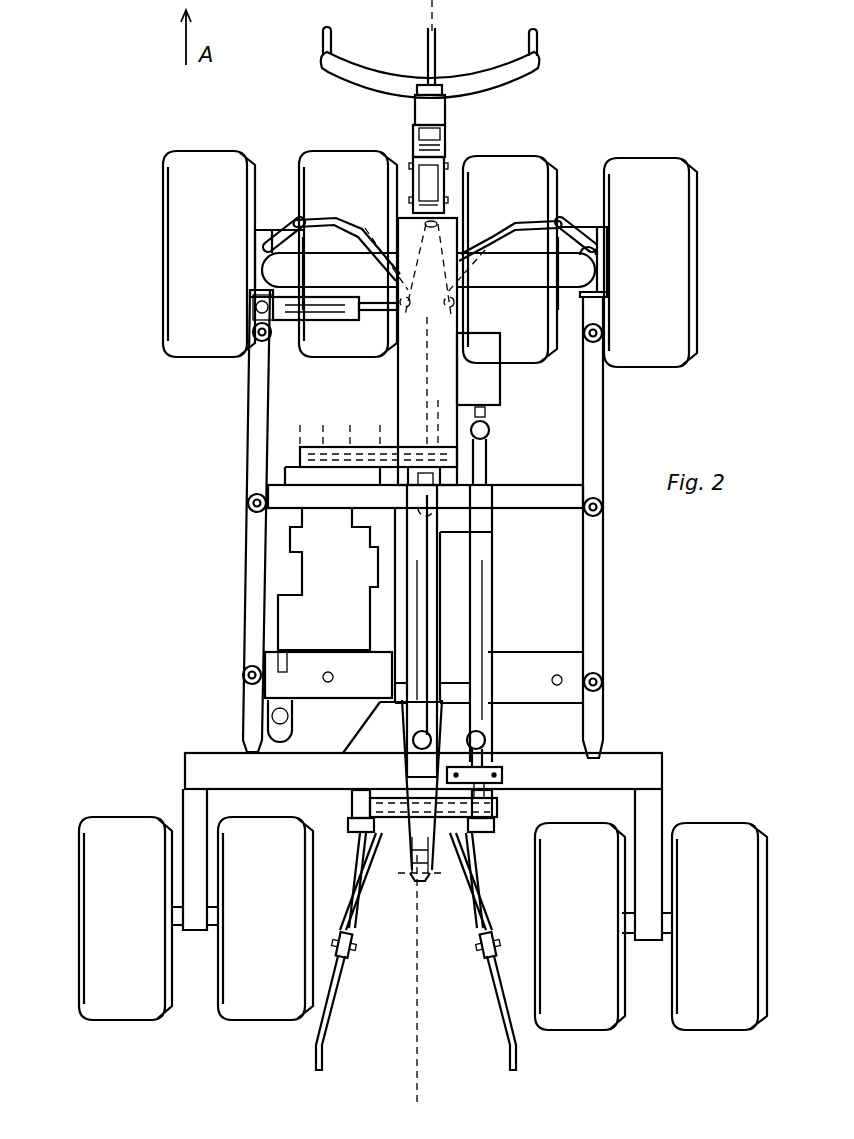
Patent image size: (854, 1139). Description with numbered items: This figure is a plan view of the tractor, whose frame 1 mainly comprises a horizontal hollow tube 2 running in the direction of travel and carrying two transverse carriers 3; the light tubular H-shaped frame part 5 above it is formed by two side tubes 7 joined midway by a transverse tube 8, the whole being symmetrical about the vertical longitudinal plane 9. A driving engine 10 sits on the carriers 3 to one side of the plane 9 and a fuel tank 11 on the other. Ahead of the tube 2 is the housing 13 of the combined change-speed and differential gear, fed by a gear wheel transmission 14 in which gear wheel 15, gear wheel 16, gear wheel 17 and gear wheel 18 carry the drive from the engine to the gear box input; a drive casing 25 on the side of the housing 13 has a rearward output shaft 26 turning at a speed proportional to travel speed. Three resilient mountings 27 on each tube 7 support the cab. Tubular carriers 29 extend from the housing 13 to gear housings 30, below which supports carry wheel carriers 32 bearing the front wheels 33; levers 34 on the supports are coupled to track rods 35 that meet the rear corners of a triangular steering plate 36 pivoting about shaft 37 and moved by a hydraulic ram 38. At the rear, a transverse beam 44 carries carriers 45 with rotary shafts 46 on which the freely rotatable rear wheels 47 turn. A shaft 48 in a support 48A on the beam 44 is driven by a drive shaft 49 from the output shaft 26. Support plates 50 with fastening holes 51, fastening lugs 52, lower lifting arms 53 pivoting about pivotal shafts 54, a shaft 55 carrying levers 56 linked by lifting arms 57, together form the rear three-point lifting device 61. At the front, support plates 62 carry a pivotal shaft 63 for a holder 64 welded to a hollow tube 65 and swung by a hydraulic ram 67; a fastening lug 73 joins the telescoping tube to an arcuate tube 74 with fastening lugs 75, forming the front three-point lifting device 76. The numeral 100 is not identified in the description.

The frame 1 is at (630, 537).
The hollow tube 2 is at (432, 604).
The carriers 3 is at (440, 530).
The H-shaped frame part 5 is at (570, 481).
The tubes 7 is at (250, 450).
The tube 8 is at (530, 505).
The vertical central longitudinal plane 9 is at (418, 1040).
The driving engine 10 is at (343, 583).
The fuel tank 11 is at (553, 601).
The housing 13 is at (398, 370).
The gear wheel transmission 14 is at (296, 422).
The gear wheel 15 is at (336, 422).
The gear wheel 16 is at (393, 382).
The gear wheel 17 is at (371, 457).
The gear wheel 18 is at (441, 423).
The drive casing 25 is at (500, 398).
The output shaft 26 is at (487, 420).
The resilient mountings 27 is at (258, 342).
The tubular carriers 29 is at (505, 288).
The housings 30 is at (262, 270).
The wheel carriers 32 is at (602, 244).
The front wheels 33 is at (202, 155).
The levers 34 is at (272, 245).
The track rods 35 is at (335, 218).
The steering plate 36 is at (432, 318).
The pivotal shaft 37 is at (416, 256).
The hydraulic ram 38 is at (325, 316).
The beam 44 is at (652, 770).
The carriers 45 is at (190, 800).
The rotary shaft 46 is at (176, 928).
The rear wheels 47 is at (218, 1022).
The shaft 48 is at (497, 805).
The support 48A is at (502, 775).
The drive shaft 49 is at (492, 712).
The support plates 50 is at (425, 878).
The fastening holes 51 is at (418, 880).
The fastening lugs 52 is at (350, 796).
The lower lifting arms 53 is at (322, 1050).
The pivotal shafts 54 is at (350, 828).
The shaft 55 is at (410, 830).
The levers 56 is at (357, 915).
The lifting arms 57 is at (340, 940).
The three-point lifting device 61 is at (464, 996).
The support plates 62 is at (446, 192).
The pivotal shaft 63 is at (446, 160).
The holder 64 is at (446, 155).
The hollow tube 65 is at (414, 110).
The hydraulic ram 67 is at (420, 180).
The fastening lug 73 is at (436, 38).
The arcuate tube 74 is at (536, 84).
The fastening lugs 75 is at (322, 38).
The three-point lifting device 76 is at (400, 48).
The mounting bracket 100 is at (417, 717).